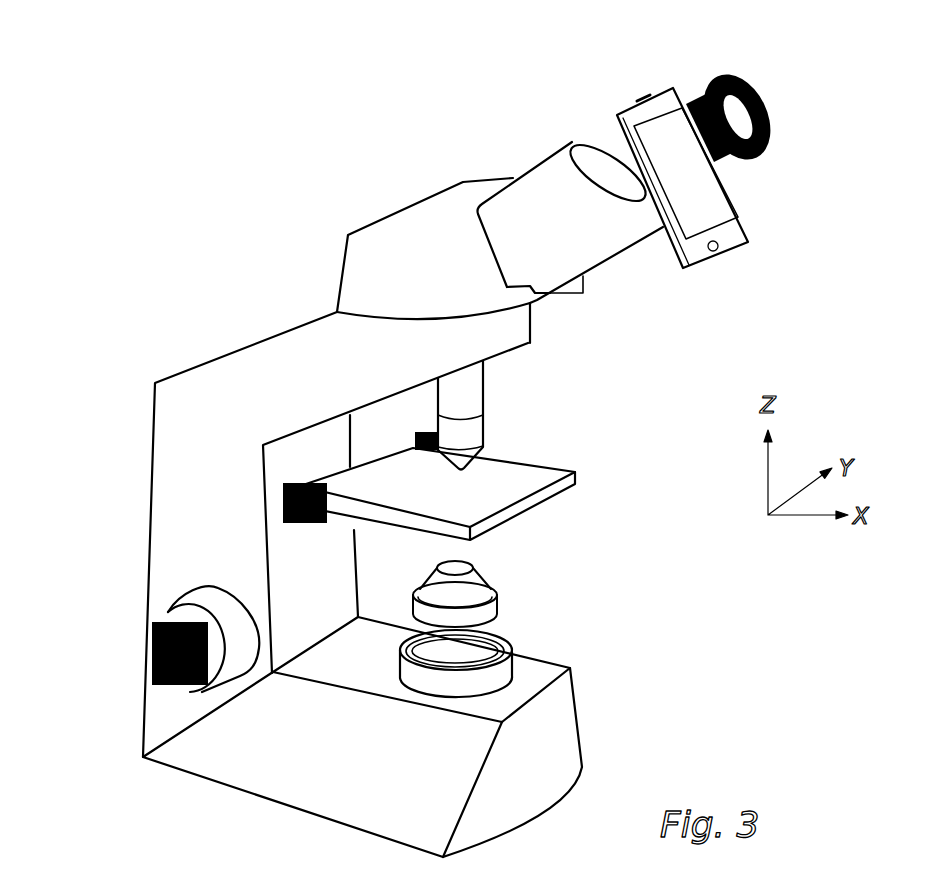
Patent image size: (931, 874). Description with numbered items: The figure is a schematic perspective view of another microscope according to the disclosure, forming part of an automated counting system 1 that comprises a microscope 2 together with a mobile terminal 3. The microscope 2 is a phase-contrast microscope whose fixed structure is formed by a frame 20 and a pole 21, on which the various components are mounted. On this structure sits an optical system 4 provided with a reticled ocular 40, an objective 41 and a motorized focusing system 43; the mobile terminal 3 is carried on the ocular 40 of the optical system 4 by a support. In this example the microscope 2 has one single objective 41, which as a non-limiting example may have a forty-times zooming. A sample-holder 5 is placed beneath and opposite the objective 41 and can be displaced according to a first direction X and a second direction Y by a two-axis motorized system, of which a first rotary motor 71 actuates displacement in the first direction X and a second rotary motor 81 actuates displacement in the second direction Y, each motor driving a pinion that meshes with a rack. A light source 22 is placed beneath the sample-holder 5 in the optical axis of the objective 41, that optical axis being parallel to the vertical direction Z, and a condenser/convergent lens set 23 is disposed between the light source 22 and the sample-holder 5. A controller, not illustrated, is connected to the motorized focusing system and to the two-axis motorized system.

The automated counting system 1 is at (416, 442).
The microscope 2 is at (358, 474).
The mobile terminal 3 is at (658, 83).
The optical system 4 is at (460, 182).
The sample-holder 5 is at (580, 474).
The frame 20 is at (303, 782).
The pole 21 is at (235, 385).
The light source 22 is at (492, 678).
The condenser/convergent lens set 23 is at (482, 610).
The reticled ocular 40 is at (600, 157).
The objective 41 is at (467, 395).
The motorized focusing system 43 is at (152, 662).
The first rotary motor 71 is at (283, 510).
The second rotary motor 81 is at (415, 437).